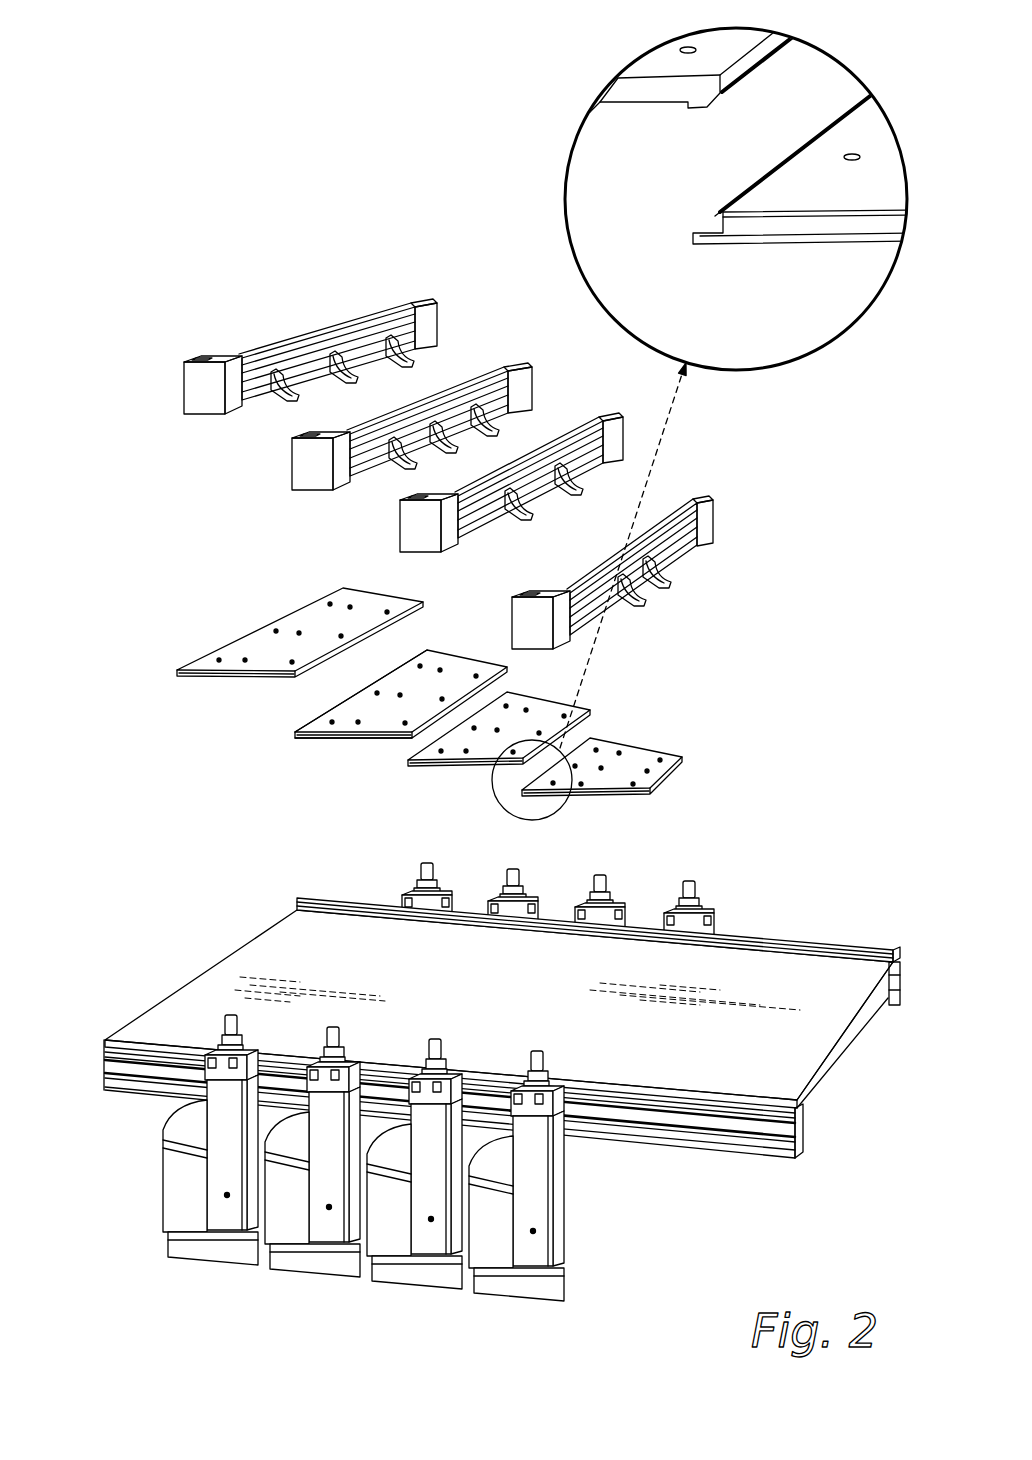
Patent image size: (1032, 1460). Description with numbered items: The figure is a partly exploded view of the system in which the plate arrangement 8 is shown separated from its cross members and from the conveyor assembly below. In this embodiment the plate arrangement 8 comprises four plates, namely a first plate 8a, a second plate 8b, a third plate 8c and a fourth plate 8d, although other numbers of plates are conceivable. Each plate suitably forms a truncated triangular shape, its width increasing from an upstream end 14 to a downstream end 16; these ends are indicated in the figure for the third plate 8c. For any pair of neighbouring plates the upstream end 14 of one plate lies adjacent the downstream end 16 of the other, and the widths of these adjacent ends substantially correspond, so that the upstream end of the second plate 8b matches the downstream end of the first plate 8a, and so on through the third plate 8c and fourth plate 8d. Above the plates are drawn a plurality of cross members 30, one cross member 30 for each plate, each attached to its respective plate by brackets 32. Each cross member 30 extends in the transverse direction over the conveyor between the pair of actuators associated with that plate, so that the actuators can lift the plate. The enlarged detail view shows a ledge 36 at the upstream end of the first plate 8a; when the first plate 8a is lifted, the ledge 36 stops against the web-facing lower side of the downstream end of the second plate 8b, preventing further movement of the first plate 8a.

The plate arrangement 8 is at (440, 697).
The first plate 8a is at (614, 730).
The second plate 8b is at (543, 720).
The third plate 8c is at (455, 670).
The fourth plate 8d is at (253, 647).
The upstream end 14 is at (427, 720).
The downstream end 16 is at (290, 725).
The cross member 30 is at (308, 327).
The bracket 32 is at (280, 400).
The ledge 36 is at (700, 220).